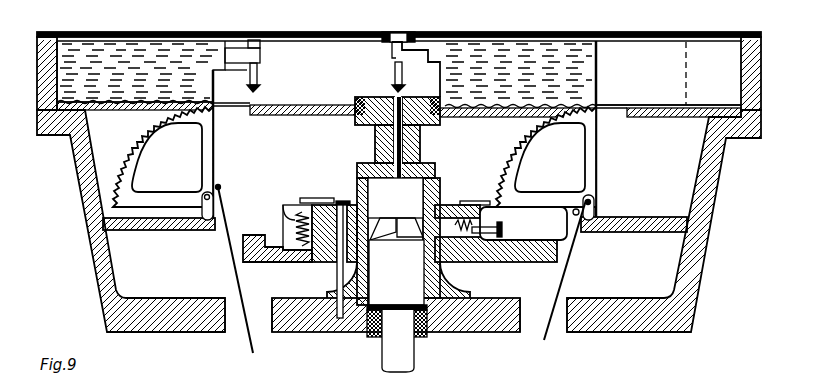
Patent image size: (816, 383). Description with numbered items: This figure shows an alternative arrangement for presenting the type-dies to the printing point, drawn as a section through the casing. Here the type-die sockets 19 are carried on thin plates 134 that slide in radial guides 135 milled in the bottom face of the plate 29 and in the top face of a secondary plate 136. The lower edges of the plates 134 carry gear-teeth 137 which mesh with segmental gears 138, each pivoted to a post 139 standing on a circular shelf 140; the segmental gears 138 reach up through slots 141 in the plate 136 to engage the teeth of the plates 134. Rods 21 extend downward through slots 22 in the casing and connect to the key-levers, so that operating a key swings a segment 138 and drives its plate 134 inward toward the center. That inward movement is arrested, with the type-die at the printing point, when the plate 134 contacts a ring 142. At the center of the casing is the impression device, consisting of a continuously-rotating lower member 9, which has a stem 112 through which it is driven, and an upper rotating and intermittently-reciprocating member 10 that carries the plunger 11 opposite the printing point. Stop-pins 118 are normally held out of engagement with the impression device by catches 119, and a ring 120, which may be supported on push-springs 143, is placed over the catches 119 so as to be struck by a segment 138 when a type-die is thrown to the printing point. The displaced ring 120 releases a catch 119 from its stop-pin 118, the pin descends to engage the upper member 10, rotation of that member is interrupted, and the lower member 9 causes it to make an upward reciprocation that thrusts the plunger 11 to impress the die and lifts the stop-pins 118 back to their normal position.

The lower member of impression device 9 is at (397, 288).
The upper member of impression device 10 is at (396, 238).
The plunger 11 is at (398, 201).
The type-socket 19 is at (332, 64).
The rod 21 is at (401, 276).
The slot 22 is at (261, 300).
The plate 29 is at (576, 31).
The stem 112 is at (414, 343).
The stop-pin 118 is at (450, 203).
The catch 119 is at (513, 225).
The ring 120 is at (512, 225).
The thin plate 134 is at (113, 80).
The radial guide 135 is at (304, 44).
The secondary plate 136 is at (282, 120).
The gear-teeth 137 is at (106, 100).
The segmental gear 138 is at (134, 137).
The post 139 is at (215, 205).
The circular shelf 140 is at (160, 236).
The slot 141 is at (238, 122).
The ring 142 is at (357, 95).
The push-spring 143 is at (286, 229).